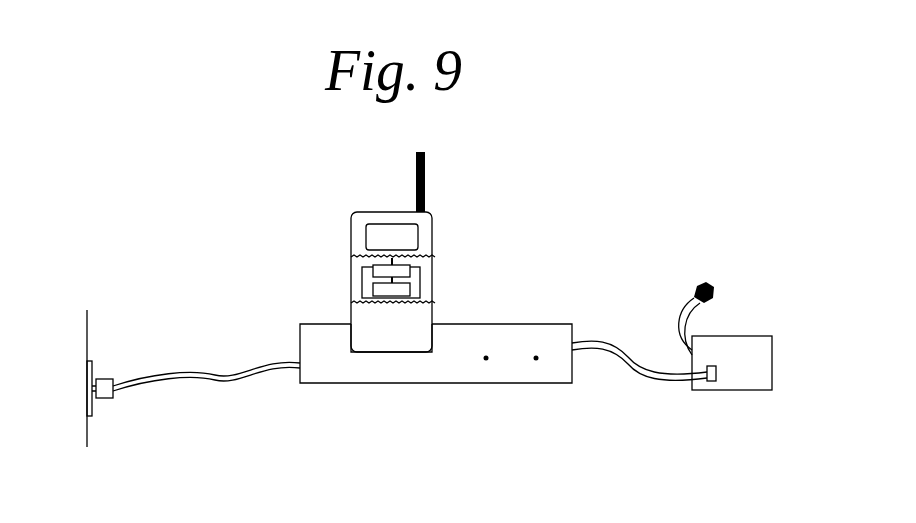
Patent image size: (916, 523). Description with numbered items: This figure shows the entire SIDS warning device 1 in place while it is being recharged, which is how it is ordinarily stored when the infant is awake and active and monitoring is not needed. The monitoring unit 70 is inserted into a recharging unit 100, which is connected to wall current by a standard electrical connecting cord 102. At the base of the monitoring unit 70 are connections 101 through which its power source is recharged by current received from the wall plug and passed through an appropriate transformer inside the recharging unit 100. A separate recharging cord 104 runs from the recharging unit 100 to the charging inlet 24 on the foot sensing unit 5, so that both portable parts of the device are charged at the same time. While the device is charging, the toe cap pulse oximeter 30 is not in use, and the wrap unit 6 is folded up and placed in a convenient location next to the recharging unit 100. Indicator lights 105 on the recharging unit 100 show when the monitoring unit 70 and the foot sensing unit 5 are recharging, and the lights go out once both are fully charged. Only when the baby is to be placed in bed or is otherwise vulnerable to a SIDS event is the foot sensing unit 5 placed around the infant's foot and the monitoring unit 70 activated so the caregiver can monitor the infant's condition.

The SIDS warning device 1 is at (248, 192).
The foot sensing unit 5 is at (777, 252).
The wrap unit 6 is at (778, 386).
The charging inlet 24 is at (707, 381).
The toe cap pulse oximeter 30 is at (730, 290).
The monitoring unit 70 is at (450, 161).
The recharging unit 100 is at (551, 313).
The connections 101 is at (404, 353).
The electrical connecting cord 102 is at (230, 372).
The recharging cord 104 is at (603, 337).
The indicator lights 105 is at (492, 350).